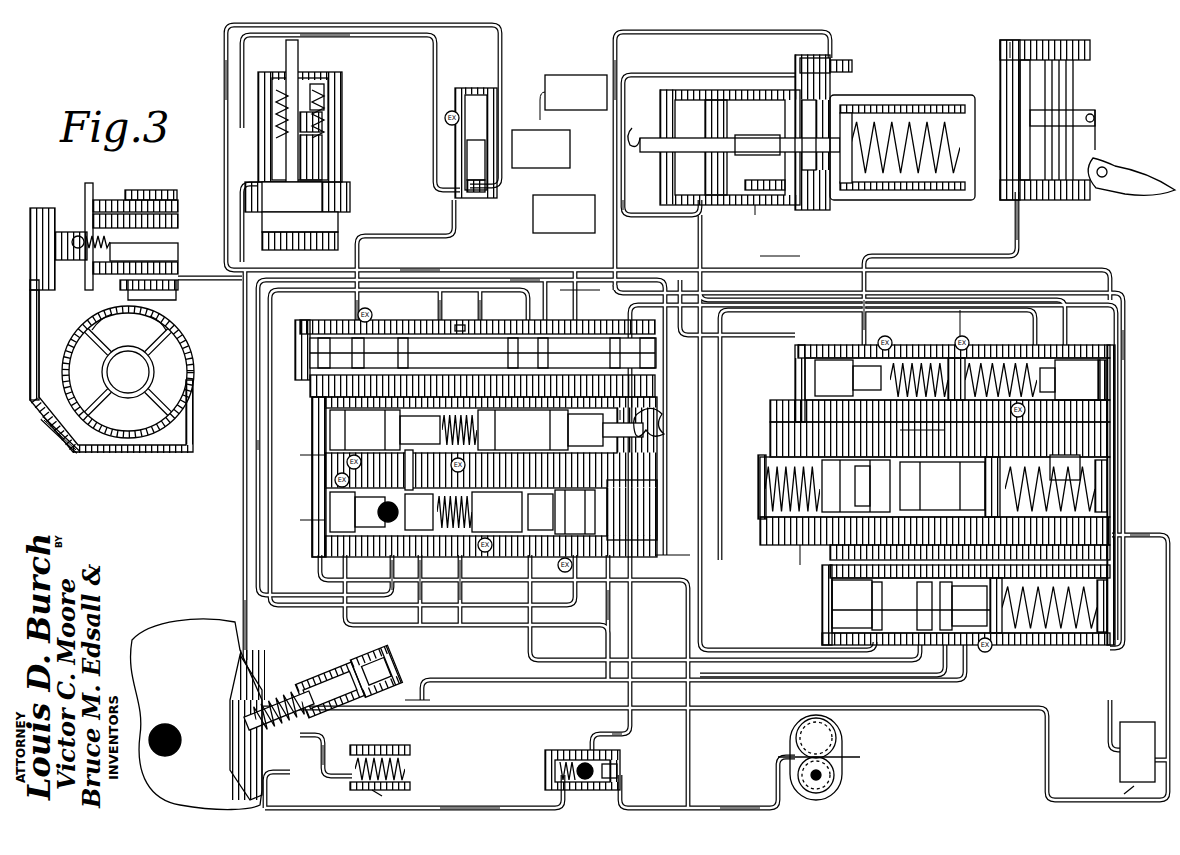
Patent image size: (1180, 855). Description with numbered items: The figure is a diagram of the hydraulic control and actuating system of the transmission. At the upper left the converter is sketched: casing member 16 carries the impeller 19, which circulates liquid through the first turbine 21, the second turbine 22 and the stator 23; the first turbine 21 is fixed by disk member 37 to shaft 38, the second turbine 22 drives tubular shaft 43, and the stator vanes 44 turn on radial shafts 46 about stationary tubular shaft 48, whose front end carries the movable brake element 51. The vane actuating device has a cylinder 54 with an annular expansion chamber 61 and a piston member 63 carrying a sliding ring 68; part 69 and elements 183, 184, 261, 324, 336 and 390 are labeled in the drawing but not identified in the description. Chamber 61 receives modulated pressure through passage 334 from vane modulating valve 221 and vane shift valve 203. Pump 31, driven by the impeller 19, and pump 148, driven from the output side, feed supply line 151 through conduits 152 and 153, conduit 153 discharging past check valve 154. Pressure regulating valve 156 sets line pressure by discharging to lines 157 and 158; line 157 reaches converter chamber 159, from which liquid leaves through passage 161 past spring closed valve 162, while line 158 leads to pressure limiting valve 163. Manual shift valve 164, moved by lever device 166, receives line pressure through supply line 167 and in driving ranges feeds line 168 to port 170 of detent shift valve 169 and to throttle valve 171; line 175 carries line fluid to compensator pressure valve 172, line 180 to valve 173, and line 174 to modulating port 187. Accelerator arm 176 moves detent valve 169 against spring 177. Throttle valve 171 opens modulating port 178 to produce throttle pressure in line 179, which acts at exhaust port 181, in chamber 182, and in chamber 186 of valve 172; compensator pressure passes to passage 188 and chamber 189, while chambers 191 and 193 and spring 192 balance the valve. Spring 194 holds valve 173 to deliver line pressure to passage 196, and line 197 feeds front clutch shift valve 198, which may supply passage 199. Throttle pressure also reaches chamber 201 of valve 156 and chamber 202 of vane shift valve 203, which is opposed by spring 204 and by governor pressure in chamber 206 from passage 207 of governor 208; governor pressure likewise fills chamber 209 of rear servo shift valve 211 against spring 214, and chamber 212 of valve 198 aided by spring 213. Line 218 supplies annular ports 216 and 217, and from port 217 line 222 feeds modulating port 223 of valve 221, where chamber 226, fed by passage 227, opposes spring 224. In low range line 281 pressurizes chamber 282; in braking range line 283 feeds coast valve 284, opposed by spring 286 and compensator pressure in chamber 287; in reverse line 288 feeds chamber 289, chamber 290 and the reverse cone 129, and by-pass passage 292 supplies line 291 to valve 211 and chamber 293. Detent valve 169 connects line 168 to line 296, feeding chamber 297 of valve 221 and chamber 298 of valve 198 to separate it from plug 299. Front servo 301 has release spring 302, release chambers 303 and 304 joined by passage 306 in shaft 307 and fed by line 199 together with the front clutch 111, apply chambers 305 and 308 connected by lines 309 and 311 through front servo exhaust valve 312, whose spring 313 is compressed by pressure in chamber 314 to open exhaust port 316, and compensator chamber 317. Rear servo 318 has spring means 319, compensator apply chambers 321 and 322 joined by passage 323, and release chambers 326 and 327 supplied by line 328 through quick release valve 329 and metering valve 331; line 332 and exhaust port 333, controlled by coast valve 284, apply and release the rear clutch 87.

The casing member 16 is at (116, 440).
The impeller 19 is at (178, 342).
The first turbine 21 is at (136, 425).
The second turbine 22 is at (84, 336).
The stator 23 is at (160, 322).
The liquid circulating pump 31 is at (168, 625).
The disk member 37 is at (38, 275).
The shaft 38 is at (178, 222).
The tubular shaft 43 is at (108, 206).
The stator vanes 44 is at (1120, 172).
The radially disposed shaft 46 is at (1108, 195).
The tubular shaft 48 is at (148, 200).
The movable element 51 is at (1000, 172).
The cylinder 54 is at (1090, 50).
The annular expansion chamber 61 is at (1018, 42).
The piston member 63 is at (1020, 82).
The ring 68 is at (1050, 198).
The servo disc 69 is at (1072, 198).
The clutch elements 87 is at (583, 195).
The multiple plate clutch element 111 is at (525, 130).
The cone clutch element 129 is at (576, 75).
The pump 148 is at (835, 790).
The fluid supply line 151 is at (630, 732).
The fluid supply conduit 152 is at (460, 806).
The fluid supply conduit 153 is at (708, 808).
The check valve 154 is at (582, 760).
The pressure regulating valve 156 is at (310, 678).
The line 157 is at (243, 582).
The line 158 is at (322, 762).
The chamber 159 is at (70, 440).
The passage 161 is at (182, 250).
The spring closed valve 162 is at (78, 236).
The pressure limiting valve 163 is at (400, 755).
The manual shift valve 164 is at (294, 350).
The manual shift lever device 166 is at (646, 368).
The supply line 167 is at (678, 516).
The line 168 is at (475, 420).
The detent shift valve 169 is at (644, 446).
The port 170 is at (510, 440).
The throttle valve 171 is at (370, 430).
The compensator pressure valve 172 is at (330, 498).
The valve 173 is at (575, 540).
The line 174 is at (662, 575).
The line 175 is at (420, 478).
The arm 176 is at (645, 438).
The spring 177 is at (435, 436).
The modulating port 178 is at (640, 465).
The throttle valve pressure line 179 is at (770, 652).
The line 180 is at (570, 430).
The exhaust port 181 is at (365, 408).
The chamber 182 is at (390, 462).
The valve body wall 183 is at (318, 415).
The port 184 is at (324, 448).
The chamber 186 is at (325, 510).
The modulating port 187 is at (412, 480).
The compensator supply passage 188 is at (266, 540).
The chamber 189 is at (468, 560).
The chamber 191 is at (348, 562).
The spring 192 is at (378, 508).
The chamber 193 is at (445, 560).
The spring 194 is at (500, 510).
The passage 196 is at (282, 598).
The line 197 is at (605, 605).
The front clutch shift valve 198 is at (880, 594).
The line 199 is at (766, 708).
The chamber 201 is at (385, 660).
The chamber 202 is at (848, 502).
The vane shift valve 203 is at (948, 470).
The spring 204 is at (1100, 495).
The chamber 206 is at (1065, 458).
The governor pressure passage 207 is at (1165, 545).
The governor 208 is at (1120, 754).
The chamber 209 is at (845, 478).
The rear servo shift valve 211 is at (778, 462).
The chamber 212 is at (1098, 635).
The spring 213 is at (1100, 615).
The spring 214 is at (765, 479).
The annular port 216 is at (808, 545).
The annular port 217 is at (1052, 540).
The line 218 is at (975, 545).
The vane modulating valve 221 is at (812, 366).
The line 222 is at (935, 420).
The modulating port 223 is at (850, 388).
The spring 224 is at (910, 410).
The chamber 226 is at (796, 380).
The passage 227 is at (798, 412).
The line 261 is at (565, 288).
The line 281 is at (1125, 320).
The chamber 282 is at (822, 584).
The line 283 is at (1108, 308).
The coast valve 284 is at (1104, 392).
The spring 286 is at (1003, 368).
The chamber 287 is at (1102, 362).
The line 288 is at (925, 682).
The chamber 289 is at (610, 498).
The chamber 290 is at (418, 698).
The line 291 is at (745, 560).
The by-pass passage 292 is at (460, 322).
The chamber 293 is at (1105, 470).
The line 296 is at (640, 395).
The chamber 297 is at (958, 340).
The chamber 298 is at (878, 612).
The plug 299 is at (840, 622).
The servo motor 301 is at (268, 78).
The spring 302 is at (322, 90).
The chamber 303 is at (326, 104).
The chamber 304 is at (320, 202).
The chamber 305 is at (320, 228).
The passage 306 is at (320, 128).
The shaft 307 is at (300, 55).
The chamber 308 is at (322, 145).
The line 309 is at (226, 50).
The line 311 is at (436, 52).
The front servo exhaust valve 312 is at (467, 148).
The spring 313 is at (474, 92).
The chamber 314 is at (467, 184).
The exhaust port 316 is at (445, 118).
The chamber 317 is at (326, 182).
The servo motor 318 is at (785, 208).
The spring means 319 is at (922, 108).
The chamber 321 is at (948, 182).
The chamber 322 is at (712, 122).
The passage 323 is at (752, 156).
The rod 324 is at (650, 138).
The chamber 326 is at (860, 195).
The chamber 327 is at (668, 180).
The line 328 is at (700, 228).
The quick release valve 329 is at (836, 66).
The metering valve 331 is at (812, 210).
The line 332 is at (790, 270).
The exhaust port 333 is at (1025, 418).
The passage 334 is at (1012, 225).
The line 336 is at (880, 320).
The exhaust port 390 is at (365, 308).